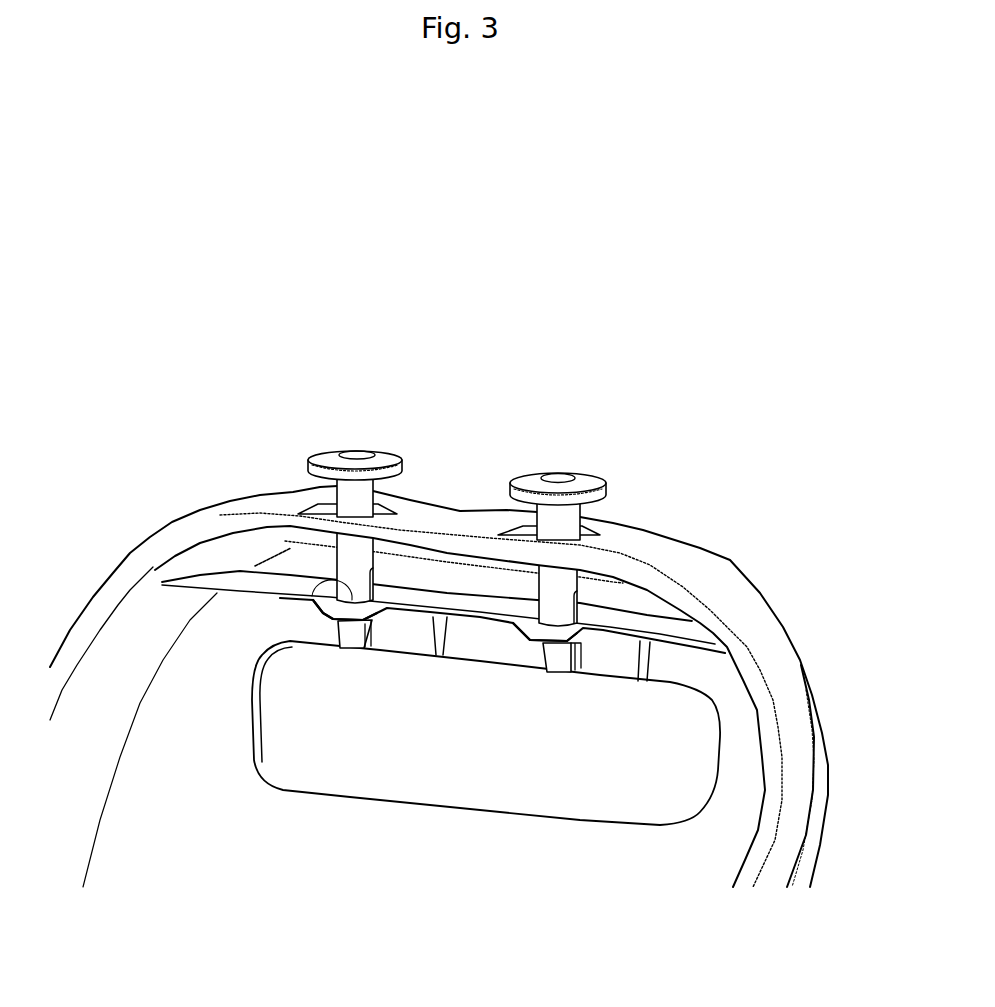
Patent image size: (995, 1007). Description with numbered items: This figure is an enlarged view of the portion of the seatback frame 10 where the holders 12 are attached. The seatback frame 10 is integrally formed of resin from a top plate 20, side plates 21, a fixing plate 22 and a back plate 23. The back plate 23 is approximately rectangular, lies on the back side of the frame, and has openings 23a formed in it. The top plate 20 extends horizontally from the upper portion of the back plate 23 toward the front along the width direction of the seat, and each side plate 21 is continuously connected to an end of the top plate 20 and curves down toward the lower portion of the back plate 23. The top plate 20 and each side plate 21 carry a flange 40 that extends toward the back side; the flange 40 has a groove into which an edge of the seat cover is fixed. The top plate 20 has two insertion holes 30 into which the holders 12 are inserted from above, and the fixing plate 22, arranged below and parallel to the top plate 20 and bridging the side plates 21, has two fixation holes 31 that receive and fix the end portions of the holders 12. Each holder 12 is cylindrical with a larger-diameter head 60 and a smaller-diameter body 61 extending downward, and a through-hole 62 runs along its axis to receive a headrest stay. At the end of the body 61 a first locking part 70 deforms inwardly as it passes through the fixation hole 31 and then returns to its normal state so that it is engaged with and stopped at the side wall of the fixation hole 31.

The seatback frame 10 is at (167, 521).
The holder 12 is at (463, 482).
The top plate 20 is at (430, 512).
The side plate 21 is at (70, 626).
The fixing plate 22 is at (663, 623).
The back plate 23 is at (715, 672).
The opening 23a is at (692, 793).
The insertion hole 30 is at (336, 513).
The fixation hole 31 is at (318, 598).
The flange 40 is at (467, 503).
The head 60 is at (318, 452).
The body 61 is at (352, 563).
The through-hole 62 is at (357, 451).
The first locking part 70 is at (350, 648).